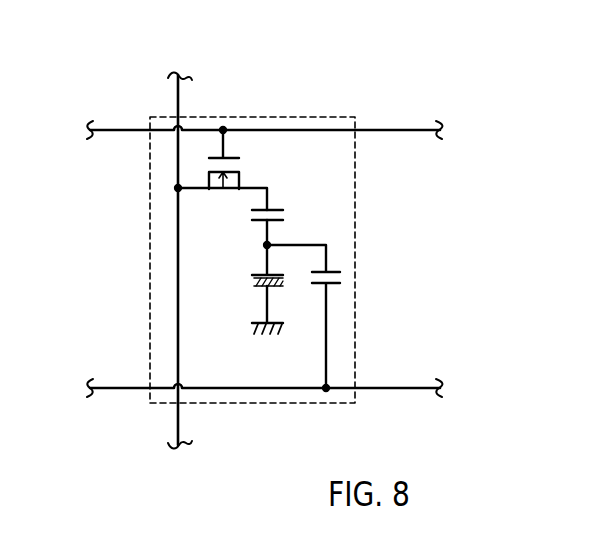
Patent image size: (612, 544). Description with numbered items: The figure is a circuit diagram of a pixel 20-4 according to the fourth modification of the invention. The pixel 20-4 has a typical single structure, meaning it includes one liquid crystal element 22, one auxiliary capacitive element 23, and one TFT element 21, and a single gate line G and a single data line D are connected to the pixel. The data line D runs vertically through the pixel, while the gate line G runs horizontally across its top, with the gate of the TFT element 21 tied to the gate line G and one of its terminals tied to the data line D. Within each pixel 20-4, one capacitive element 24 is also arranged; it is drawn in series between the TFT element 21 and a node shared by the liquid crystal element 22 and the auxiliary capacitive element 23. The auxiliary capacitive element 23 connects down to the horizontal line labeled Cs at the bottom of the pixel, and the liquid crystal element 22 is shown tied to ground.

The pixel 20-4 is at (150, 208).
The TFT element 21 is at (193, 170).
The liquid crystal element 22 is at (243, 285).
The auxiliary capacitive element 23 is at (349, 275).
The capacitive element 24 is at (293, 215).
The data line D is at (178, 92).
The gate line G is at (421, 130).
The storage capacitor line Cs is at (421, 388).